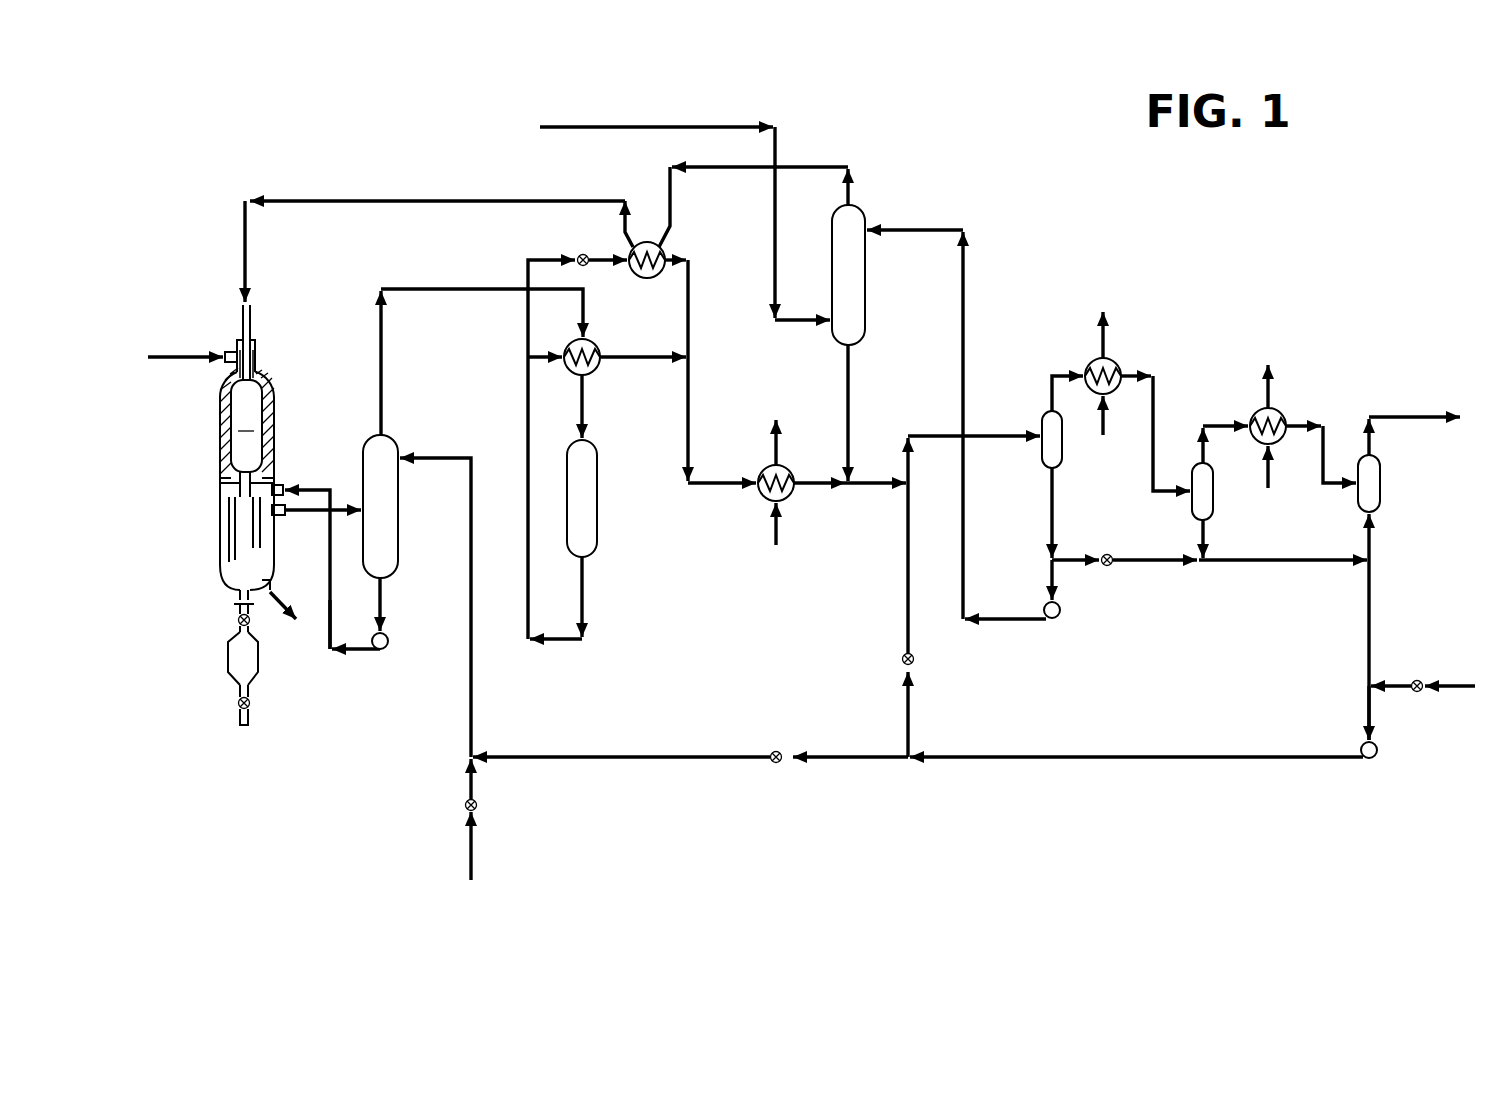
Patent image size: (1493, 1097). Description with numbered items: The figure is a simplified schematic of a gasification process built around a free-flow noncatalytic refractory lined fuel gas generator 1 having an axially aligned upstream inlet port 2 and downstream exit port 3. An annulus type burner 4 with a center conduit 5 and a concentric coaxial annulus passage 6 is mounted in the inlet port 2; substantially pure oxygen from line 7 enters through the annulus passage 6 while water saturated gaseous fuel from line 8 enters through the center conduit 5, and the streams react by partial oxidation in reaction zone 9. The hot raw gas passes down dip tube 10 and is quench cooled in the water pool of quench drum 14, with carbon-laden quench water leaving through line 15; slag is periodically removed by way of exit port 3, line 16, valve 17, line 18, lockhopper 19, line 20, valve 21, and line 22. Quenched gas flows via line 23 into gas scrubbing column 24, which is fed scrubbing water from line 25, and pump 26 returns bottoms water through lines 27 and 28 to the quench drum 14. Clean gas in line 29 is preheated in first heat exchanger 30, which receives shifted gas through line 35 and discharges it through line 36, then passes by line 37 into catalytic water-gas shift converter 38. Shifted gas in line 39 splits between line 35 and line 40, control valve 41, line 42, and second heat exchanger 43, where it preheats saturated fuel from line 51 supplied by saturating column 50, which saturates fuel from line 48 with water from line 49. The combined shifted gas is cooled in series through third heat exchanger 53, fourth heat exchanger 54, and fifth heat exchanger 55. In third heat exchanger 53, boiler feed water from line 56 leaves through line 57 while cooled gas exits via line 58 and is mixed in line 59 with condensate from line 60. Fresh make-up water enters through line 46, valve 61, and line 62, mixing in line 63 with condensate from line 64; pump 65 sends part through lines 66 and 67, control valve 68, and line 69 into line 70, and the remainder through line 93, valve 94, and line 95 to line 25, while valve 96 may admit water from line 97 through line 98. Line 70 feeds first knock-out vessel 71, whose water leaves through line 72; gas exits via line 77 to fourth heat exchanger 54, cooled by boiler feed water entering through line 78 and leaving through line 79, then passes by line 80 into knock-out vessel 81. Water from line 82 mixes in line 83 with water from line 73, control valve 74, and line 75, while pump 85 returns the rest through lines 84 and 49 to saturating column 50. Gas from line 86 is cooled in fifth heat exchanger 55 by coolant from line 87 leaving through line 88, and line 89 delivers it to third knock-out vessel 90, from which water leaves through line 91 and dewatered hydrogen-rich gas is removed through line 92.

The fuel gas generator 1 is at (220, 405).
The inlet port 2 is at (232, 371).
The exit port 3 is at (232, 585).
The annulus type burner 4 is at (255, 345).
The center conduit 5 is at (243, 325).
The annulus passage 6 is at (252, 358).
The line 7 is at (190, 357).
The line 8 is at (245, 232).
The reaction zone 9 is at (246, 419).
The dip tube 10 is at (222, 488).
The quench drum 14 is at (262, 590).
The line 15 is at (282, 604).
The line 16 is at (234, 604).
The valve 17 is at (238, 620).
The line 18 is at (240, 634).
The lockhopper 19 is at (228, 660).
The line 20 is at (250, 701).
The valve 21 is at (238, 705).
The line 22 is at (250, 718).
The line 23 is at (325, 505).
The gas scrubbing column 24 is at (395, 440).
The line 25 is at (471, 500).
The pump 26 is at (388, 646).
The line 27 is at (382, 600).
The line 28 is at (331, 612).
The line 29 is at (383, 356).
The first heat exchanger 30 is at (592, 342).
The line 35 is at (538, 368).
The line 36 is at (670, 355).
The line 37 is at (587, 398).
The catalytic water-gas shift converter 38 is at (598, 462).
The line 39 is at (585, 610).
The line 40 is at (528, 328).
The control valve 41 is at (580, 255).
The line 42 is at (612, 258).
The second heat exchanger 43 is at (665, 252).
The line 46 is at (1460, 690).
The line 48 is at (668, 122).
The line 49 is at (965, 265).
The saturating column 50 is at (866, 215).
The line 51 is at (752, 162).
The third heat exchanger 53 is at (758, 468).
The fourth heat exchanger 54 is at (1090, 362).
The fifth heat exchanger 55 is at (1256, 412).
The line 56 is at (773, 528).
The line 57 is at (780, 440).
The line 58 is at (808, 487).
The line 59 is at (906, 468).
The line 60 is at (850, 400).
The valve 61 is at (1422, 680).
The line 62 is at (1393, 682).
The line 63 is at (1367, 712).
The line 64 is at (1372, 612).
The pump 65 is at (1378, 752).
The line 66 is at (1170, 756).
The line 67 is at (906, 700).
The control valve 68 is at (900, 660).
The line 69 is at (905, 618).
The line 70 is at (997, 440).
The first knock-out vessel 71 is at (1040, 420).
The line 72 is at (1048, 532).
The line 73 is at (1065, 557).
The control valve 74 is at (1112, 555).
The line 75 is at (1140, 566).
The line 77 is at (1047, 378).
The line 78 is at (1100, 432).
The line 79 is at (1112, 330).
The line 80 is at (1158, 400).
The knock-out vessel 81 is at (1215, 497).
The line 82 is at (1210, 540).
The line 83 is at (1280, 567).
The line 84 is at (1045, 575).
The pump 85 is at (1062, 612).
The line 86 is at (1222, 425).
The line 87 is at (1272, 480).
The line 88 is at (1273, 392).
The line 89 is at (1326, 432).
The third knock-out vessel 90 is at (1382, 488).
The line 91 is at (1372, 547).
The line 92 is at (1398, 417).
The line 93 is at (828, 765).
The valve 94 is at (778, 750).
The line 95 is at (666, 757).
The valve 96 is at (465, 808).
The line 97 is at (473, 845).
The line 98 is at (468, 775).